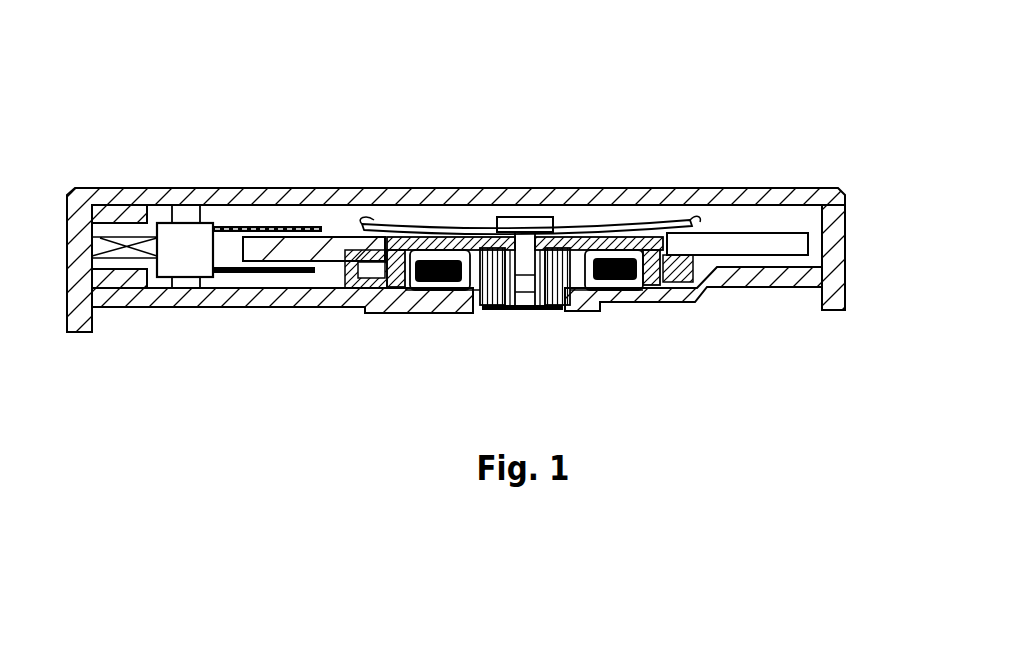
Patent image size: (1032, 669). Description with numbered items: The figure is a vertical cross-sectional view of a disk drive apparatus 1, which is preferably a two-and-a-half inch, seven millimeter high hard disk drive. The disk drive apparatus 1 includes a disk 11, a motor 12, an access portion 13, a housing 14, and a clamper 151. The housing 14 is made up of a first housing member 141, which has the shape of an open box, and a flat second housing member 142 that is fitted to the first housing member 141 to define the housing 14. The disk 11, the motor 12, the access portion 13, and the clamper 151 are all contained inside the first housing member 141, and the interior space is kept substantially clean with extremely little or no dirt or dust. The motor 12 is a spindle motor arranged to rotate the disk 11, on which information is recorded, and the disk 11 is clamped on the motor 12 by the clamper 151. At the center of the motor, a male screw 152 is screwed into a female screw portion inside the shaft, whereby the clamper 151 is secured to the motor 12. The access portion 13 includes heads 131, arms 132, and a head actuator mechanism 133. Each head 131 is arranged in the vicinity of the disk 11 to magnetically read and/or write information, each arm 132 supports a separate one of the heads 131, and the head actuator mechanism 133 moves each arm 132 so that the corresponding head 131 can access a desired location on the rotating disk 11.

The disk drive apparatus 1 is at (152, 90).
The disk 11 is at (763, 247).
The motor 12 is at (530, 209).
The access portion 13 is at (239, 217).
The head 131 is at (318, 234).
The arm 132 is at (237, 226).
The head actuator mechanism 133 is at (177, 270).
The housing 14 is at (482, 178).
The first housing member 141 is at (838, 232).
The second housing member 142 is at (790, 106).
The clamper 151 is at (433, 228).
The male screw 152 is at (510, 217).